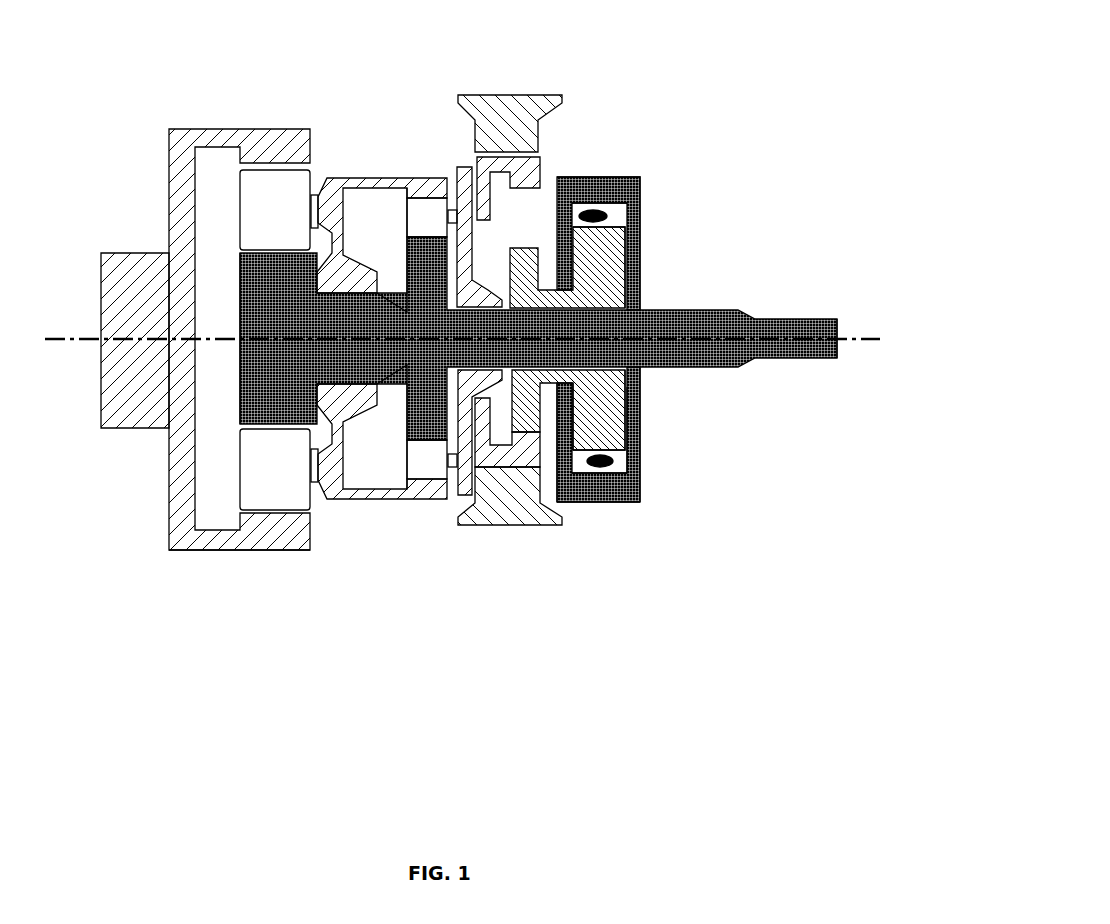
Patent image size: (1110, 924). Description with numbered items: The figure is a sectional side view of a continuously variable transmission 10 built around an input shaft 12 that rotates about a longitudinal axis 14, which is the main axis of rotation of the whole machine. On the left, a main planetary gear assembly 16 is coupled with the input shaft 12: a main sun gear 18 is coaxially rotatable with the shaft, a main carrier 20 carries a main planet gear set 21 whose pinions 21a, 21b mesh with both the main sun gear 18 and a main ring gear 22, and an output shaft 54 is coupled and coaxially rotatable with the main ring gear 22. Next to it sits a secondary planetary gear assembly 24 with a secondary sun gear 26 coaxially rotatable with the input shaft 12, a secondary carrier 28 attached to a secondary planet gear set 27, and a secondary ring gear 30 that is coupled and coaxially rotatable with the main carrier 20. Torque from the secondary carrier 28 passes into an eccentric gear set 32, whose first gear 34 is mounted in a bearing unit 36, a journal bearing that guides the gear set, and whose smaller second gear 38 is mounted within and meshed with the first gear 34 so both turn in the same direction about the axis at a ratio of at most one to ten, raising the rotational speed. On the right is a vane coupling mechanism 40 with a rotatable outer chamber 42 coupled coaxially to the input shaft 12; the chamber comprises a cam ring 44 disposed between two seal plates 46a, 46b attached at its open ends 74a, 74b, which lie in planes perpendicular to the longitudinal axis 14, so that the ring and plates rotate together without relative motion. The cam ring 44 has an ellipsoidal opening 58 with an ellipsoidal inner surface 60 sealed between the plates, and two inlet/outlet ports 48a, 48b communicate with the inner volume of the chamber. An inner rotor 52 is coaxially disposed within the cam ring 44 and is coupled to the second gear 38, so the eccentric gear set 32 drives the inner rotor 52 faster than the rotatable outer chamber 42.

The continuously variable transmission 10 is at (875, 24).
The input shaft 12 is at (807, 358).
The longitudinal axis 14 is at (840, 330).
The main planetary gear assembly 16 is at (228, 108).
The main sun gear 18 is at (242, 397).
The main carrier 20 is at (338, 497).
The main planet gear set 21 is at (240, 468).
The pinion 21a is at (287, 476).
The pinion 21b is at (292, 222).
The main ring gear 22 is at (257, 553).
The secondary planetary gear assembly 24 is at (345, 153).
The secondary sun gear 26 is at (408, 405).
The secondary planet gear set 27 is at (408, 463).
The secondary carrier 28 is at (470, 494).
The secondary ring gear 30 is at (430, 500).
The eccentric gear set 32 is at (455, 83).
The first gear 34 is at (487, 221).
The bearing unit 36 is at (502, 525).
The second gear 38 is at (516, 247).
The vane coupling mechanism 40 is at (560, 158).
The rotatable outer chamber 42 is at (660, 194).
The cam ring 44 is at (585, 503).
The seal plate 46a is at (642, 450).
The seal plate 46b is at (557, 467).
The inlet/outlet port 48a is at (600, 468).
The inlet/outlet port 48b is at (588, 212).
The inner rotor 52 is at (618, 257).
The output shaft 54 is at (116, 250).
The ellipsoidal opening 58 is at (614, 490).
The ellipsoidal inner surface 60 is at (607, 215).
The open end 74a is at (640, 421).
The open end 74b is at (586, 409).